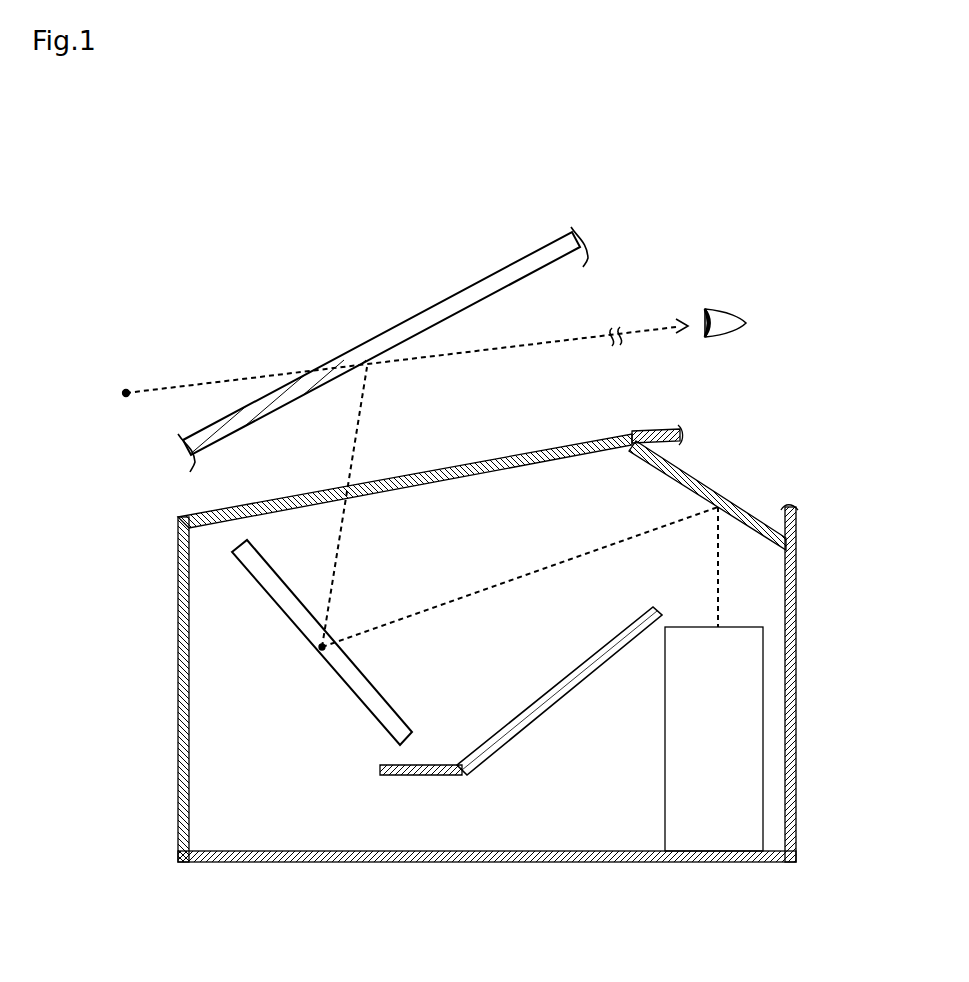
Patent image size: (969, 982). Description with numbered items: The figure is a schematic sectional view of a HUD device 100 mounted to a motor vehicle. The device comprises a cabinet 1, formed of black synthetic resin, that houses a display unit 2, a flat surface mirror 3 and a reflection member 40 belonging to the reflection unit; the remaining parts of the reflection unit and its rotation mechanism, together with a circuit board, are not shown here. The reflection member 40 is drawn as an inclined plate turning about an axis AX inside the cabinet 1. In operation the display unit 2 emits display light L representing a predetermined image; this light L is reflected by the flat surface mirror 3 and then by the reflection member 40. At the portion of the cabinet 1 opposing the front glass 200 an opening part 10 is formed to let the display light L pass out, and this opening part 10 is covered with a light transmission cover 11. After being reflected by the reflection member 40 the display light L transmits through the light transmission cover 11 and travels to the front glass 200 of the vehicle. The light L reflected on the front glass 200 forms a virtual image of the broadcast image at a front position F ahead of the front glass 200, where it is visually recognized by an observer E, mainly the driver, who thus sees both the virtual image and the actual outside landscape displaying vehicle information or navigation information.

The HUD device 100 is at (488, 656).
The cabinet 1 is at (487, 851).
The display unit 2 is at (700, 773).
The flat surface mirror 3 is at (701, 476).
The opening part 10 is at (618, 440).
The light transmission cover 11 is at (530, 446).
The reflection member 40 is at (355, 690).
The front glass 200 is at (470, 290).
The rotation axis AX is at (319, 649).
The display light L is at (603, 549).
The front position F is at (405, 358).
The observer E is at (718, 297).